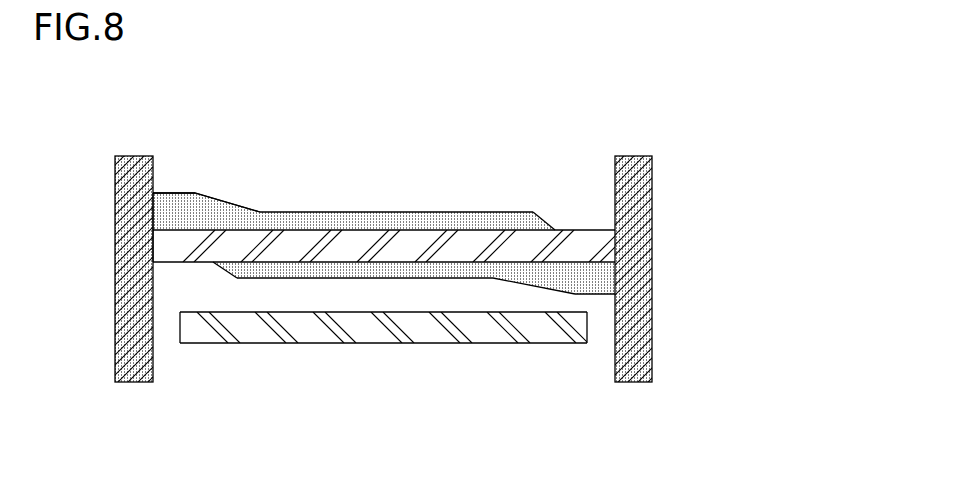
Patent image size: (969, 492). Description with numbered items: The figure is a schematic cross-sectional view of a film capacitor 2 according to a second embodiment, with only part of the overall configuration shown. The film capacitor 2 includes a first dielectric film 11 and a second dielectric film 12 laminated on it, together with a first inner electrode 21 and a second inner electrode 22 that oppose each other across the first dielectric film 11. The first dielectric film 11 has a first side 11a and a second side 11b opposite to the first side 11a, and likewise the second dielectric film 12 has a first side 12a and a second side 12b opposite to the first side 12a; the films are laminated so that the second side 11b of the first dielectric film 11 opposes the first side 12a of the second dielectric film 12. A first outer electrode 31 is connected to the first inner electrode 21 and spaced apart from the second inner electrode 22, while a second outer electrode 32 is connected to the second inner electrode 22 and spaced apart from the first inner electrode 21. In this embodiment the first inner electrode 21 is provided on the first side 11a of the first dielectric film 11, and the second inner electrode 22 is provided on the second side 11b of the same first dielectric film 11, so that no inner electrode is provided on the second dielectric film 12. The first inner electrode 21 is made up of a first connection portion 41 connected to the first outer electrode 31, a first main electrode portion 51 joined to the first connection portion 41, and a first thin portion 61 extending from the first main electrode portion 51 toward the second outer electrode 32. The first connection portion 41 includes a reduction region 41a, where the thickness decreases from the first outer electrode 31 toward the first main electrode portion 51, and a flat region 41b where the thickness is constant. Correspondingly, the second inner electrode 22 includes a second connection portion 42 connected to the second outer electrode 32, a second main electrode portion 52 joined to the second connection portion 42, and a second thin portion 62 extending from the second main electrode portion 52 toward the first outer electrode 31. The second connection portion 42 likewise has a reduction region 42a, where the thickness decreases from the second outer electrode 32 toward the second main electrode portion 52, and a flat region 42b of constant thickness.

The film capacitor 2 is at (670, 122).
The first dielectric film 11 is at (332, 245).
The first side 11a is at (160, 236).
The second side 11b is at (178, 262).
The second dielectric film 12 is at (459, 330).
The first side 12a is at (588, 313).
The second side 12b is at (578, 333).
The first inner electrode 21 is at (380, 217).
The second inner electrode 22 is at (380, 317).
The first outer electrode 31 is at (128, 192).
The second outer electrode 32 is at (640, 193).
The first connection portion 41 is at (215, 163).
The reduction region 41a is at (235, 177).
The flat region 41b is at (170, 197).
The second connection portion 42 is at (524, 355).
The reduction region 42a is at (540, 273).
The flat region 42b is at (597, 291).
The first main electrode portion 51 is at (380, 213).
The second main electrode portion 52 is at (345, 272).
The first thin portion 61 is at (482, 163).
The second thin portion 62 is at (214, 262).